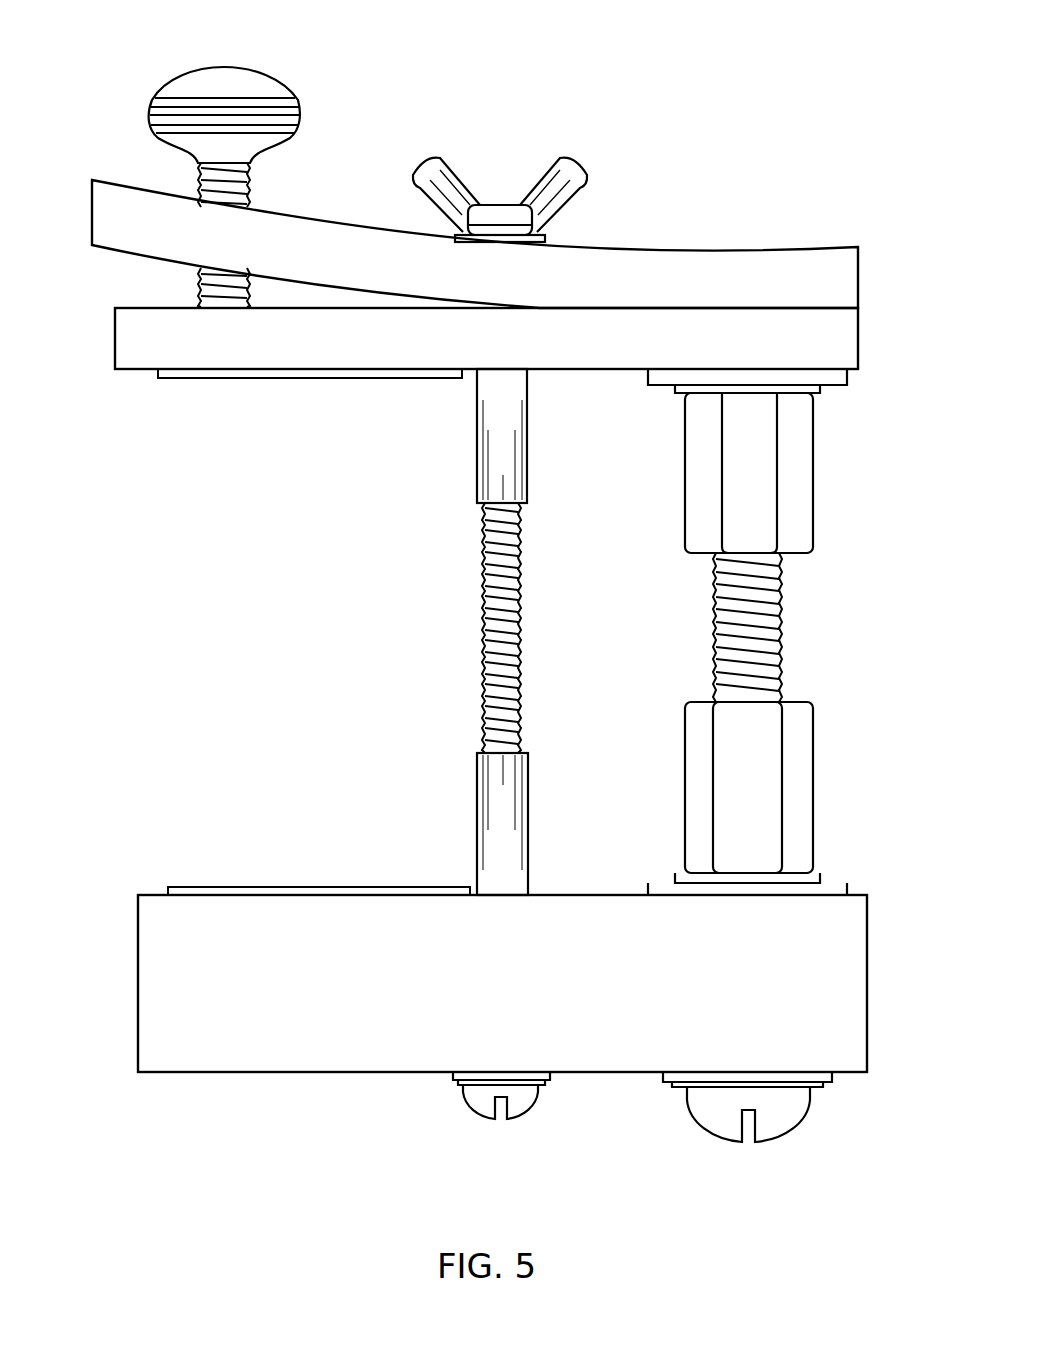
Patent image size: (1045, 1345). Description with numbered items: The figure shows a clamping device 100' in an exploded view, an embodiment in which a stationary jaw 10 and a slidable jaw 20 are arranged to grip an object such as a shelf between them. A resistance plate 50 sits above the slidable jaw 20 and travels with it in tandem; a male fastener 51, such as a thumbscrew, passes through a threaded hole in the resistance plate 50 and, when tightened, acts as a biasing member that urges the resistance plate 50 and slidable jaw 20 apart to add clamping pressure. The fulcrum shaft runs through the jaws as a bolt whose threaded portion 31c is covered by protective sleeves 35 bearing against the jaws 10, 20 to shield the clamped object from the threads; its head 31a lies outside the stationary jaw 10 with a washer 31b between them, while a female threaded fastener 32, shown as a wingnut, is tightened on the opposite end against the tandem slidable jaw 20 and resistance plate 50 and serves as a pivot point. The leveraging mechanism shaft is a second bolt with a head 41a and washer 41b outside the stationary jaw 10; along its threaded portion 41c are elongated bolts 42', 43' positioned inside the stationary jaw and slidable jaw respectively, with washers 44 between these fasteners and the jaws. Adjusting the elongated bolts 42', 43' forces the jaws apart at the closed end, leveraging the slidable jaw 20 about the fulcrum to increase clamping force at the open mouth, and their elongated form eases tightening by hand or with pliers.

The clamping device 100' is at (815, 45).
The stationary jaw 10 is at (158, 985).
The slidable jaw 20 is at (135, 348).
The resistance plate 50 is at (137, 223).
The male fastener 51 is at (188, 90).
The female threaded fastener 32 is at (430, 170).
The protective sleeve 35 is at (483, 470).
The threaded portion 31c is at (485, 627).
The washer 31b is at (455, 1082).
The head 31a is at (475, 1100).
The washer 44 is at (800, 377).
The elongated bolt 43' is at (808, 447).
The threaded portion 41c is at (782, 577).
The elongated bolt 42' is at (793, 787).
The washer 41b is at (825, 1078).
The head 41a is at (790, 1112).